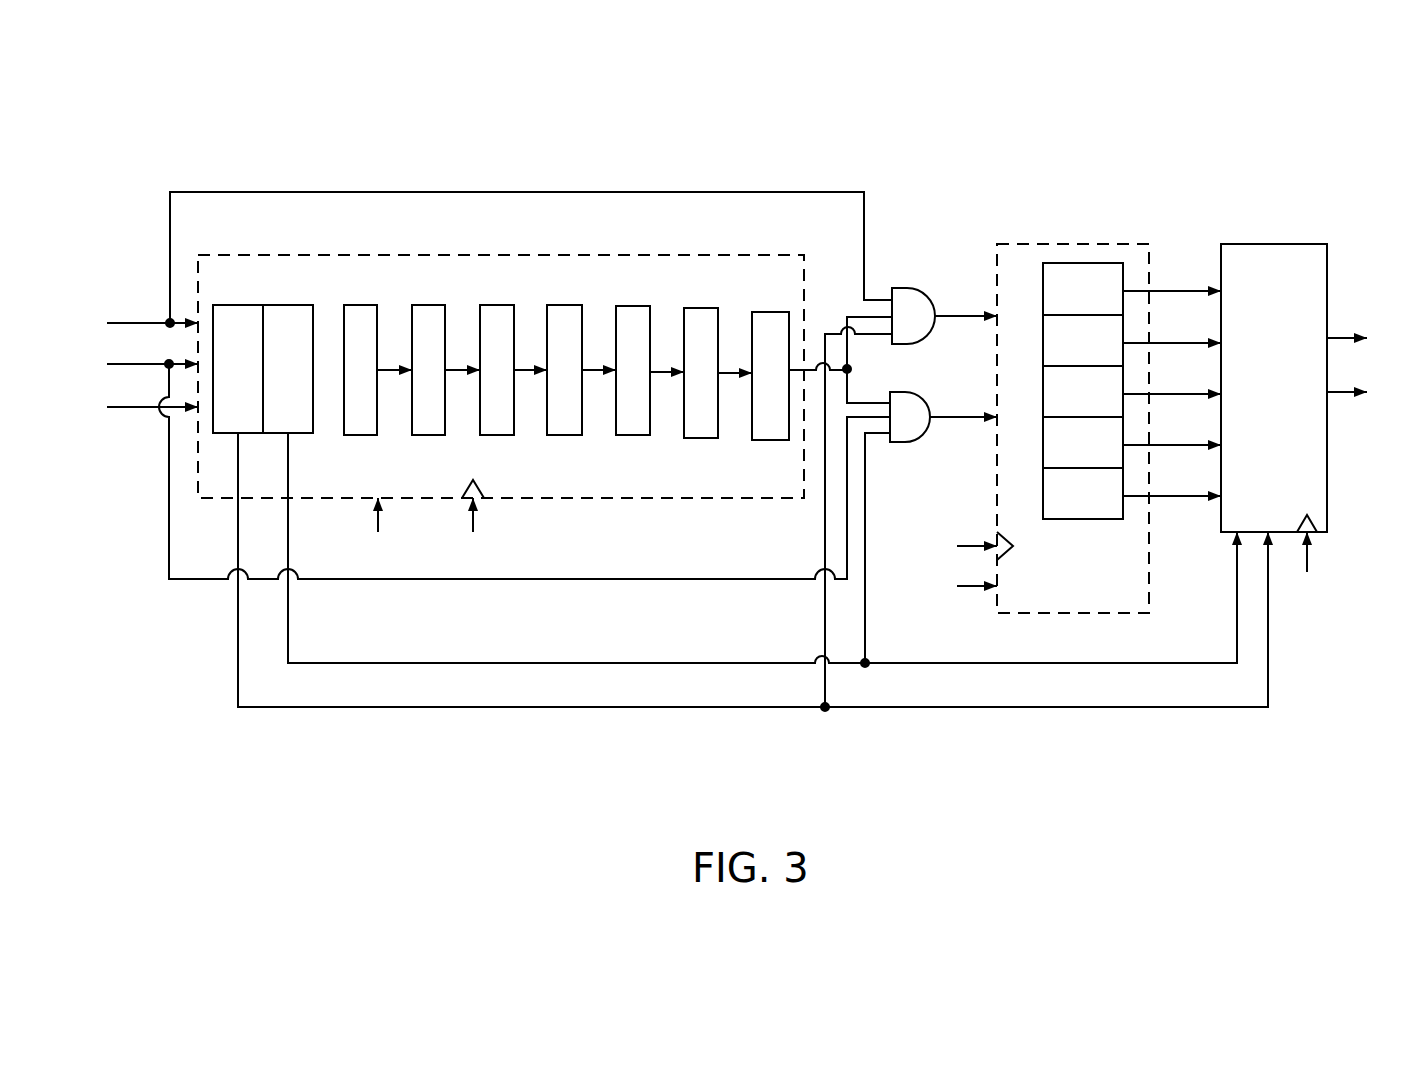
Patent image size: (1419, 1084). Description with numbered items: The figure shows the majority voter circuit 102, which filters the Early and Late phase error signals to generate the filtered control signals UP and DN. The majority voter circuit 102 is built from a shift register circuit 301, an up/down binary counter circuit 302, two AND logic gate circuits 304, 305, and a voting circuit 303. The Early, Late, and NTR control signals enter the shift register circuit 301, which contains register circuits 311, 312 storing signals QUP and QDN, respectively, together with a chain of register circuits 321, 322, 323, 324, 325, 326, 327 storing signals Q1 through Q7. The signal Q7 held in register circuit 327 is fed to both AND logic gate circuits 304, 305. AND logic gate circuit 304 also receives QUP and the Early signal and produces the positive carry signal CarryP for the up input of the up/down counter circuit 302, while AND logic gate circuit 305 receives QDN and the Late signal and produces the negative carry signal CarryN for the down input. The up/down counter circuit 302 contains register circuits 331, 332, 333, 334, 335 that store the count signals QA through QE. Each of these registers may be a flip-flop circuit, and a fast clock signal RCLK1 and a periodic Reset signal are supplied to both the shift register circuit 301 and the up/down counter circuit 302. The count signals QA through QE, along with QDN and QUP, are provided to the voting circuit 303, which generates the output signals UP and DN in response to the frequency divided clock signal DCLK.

The majority voter circuit 102 is at (764, 127).
The shift register circuit 301 is at (517, 255).
The up/down binary counter circuit 302 is at (1085, 244).
The voting circuit 303 is at (1283, 244).
The AND logic gate circuit 304 is at (905, 288).
The AND logic gate circuit 305 is at (908, 442).
The register circuit 311 is at (230, 305).
The register circuit 312 is at (293, 305).
The register circuit 321 is at (372, 305).
The register circuit 322 is at (438, 305).
The register circuit 323 is at (504, 305).
The register circuit 324 is at (570, 305).
The register circuit 325 is at (638, 306).
The register circuit 326 is at (701, 310).
The register circuit 327 is at (765, 440).
The register circuit 331 is at (1043, 281).
The register circuit 332 is at (1043, 333).
The register circuit 333 is at (1043, 384).
The register circuit 334 is at (1043, 436).
The register circuit 335 is at (1043, 487).